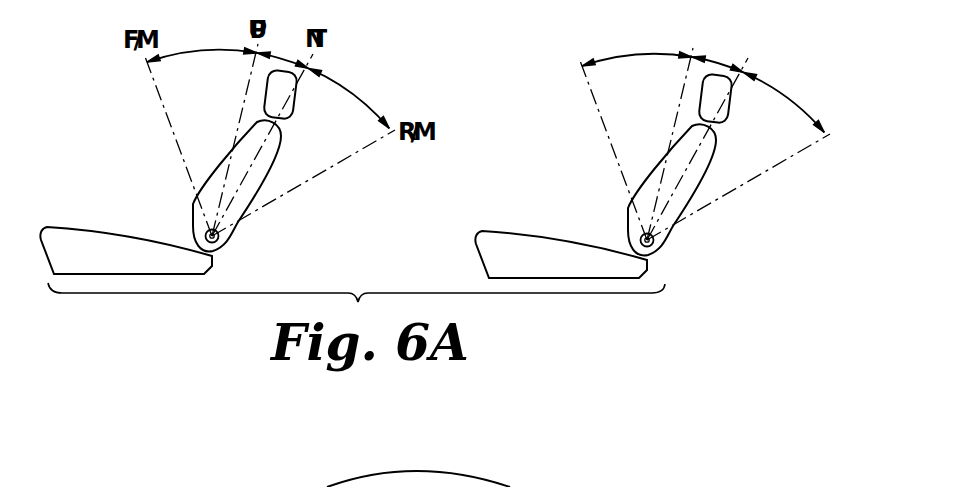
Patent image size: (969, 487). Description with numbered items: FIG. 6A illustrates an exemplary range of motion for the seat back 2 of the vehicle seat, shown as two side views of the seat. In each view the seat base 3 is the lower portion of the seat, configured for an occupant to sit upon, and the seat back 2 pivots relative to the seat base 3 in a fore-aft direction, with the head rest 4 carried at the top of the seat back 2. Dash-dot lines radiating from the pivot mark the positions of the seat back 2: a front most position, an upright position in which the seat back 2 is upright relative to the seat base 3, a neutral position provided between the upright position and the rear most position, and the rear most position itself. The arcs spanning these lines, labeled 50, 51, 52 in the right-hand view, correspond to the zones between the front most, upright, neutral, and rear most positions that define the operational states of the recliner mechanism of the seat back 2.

The seat back 2 is at (120, 243).
The seat base 3 is at (243, 205).
The head rest 4 is at (289, 110).
The forward tilt angle range 50 is at (637, 46).
The upright angle range 51 is at (718, 49).
The rearward tilt angle range 52 is at (784, 99).